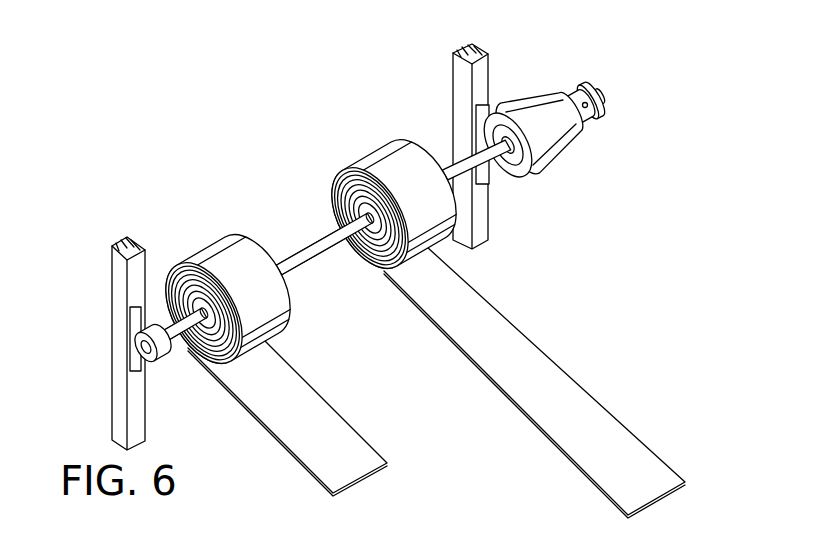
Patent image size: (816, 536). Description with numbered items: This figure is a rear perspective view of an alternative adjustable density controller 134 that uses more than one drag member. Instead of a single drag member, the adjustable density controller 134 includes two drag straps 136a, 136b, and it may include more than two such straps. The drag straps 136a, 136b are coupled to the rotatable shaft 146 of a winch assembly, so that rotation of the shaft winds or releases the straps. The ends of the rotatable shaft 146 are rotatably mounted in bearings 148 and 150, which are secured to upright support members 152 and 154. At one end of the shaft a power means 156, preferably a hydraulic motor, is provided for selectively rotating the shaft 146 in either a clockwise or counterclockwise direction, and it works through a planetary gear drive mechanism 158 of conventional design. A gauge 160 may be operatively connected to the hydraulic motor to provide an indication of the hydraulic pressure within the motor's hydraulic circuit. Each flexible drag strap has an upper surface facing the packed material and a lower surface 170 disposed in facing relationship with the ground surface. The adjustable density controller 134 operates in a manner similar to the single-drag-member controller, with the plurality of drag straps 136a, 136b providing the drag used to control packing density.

The adjustable density controller 134 is at (251, 186).
The drag strap 136a is at (343, 437).
The drag strap 136b is at (528, 365).
The rotatable shaft 146 is at (318, 256).
The bearing 148 is at (137, 337).
The bearing 150 is at (527, 173).
The support member 152 is at (120, 275).
The support member 154 is at (480, 72).
The power means 156 is at (612, 95).
The planetary gear drive mechanism 158 is at (555, 147).
The gauge 160 is at (595, 117).
The lower surface 170 is at (556, 457).